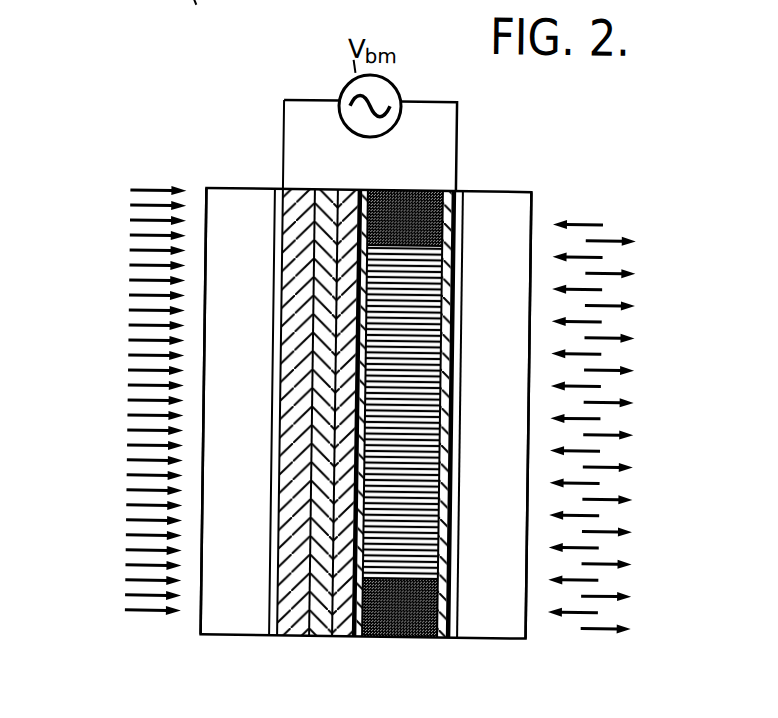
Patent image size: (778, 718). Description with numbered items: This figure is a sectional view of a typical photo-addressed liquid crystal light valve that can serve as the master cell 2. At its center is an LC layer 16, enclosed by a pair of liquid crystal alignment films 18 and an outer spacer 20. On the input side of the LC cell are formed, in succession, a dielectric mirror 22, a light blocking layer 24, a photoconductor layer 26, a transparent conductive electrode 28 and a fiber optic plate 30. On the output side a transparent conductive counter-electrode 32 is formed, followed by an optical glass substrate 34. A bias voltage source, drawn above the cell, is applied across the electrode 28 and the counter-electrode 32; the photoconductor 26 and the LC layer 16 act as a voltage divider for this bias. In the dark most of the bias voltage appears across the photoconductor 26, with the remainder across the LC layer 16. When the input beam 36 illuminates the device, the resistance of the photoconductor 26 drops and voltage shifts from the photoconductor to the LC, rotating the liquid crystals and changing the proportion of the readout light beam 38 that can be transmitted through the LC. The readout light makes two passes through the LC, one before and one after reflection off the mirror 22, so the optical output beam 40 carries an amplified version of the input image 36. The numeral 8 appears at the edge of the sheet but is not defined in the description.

The master cell 2 is at (104, 184).
The light source 8 is at (196, 18).
The LC layer 16 is at (384, 580).
The liquid crystal alignment films 18 is at (364, 190).
The outer spacer 20 is at (425, 640).
The dielectric mirror 22 is at (340, 192).
The light blocking layer 24 is at (322, 637).
The photoconductor layer 26 is at (290, 637).
The transparent conductive electrode 28 is at (268, 213).
The fiber optic plate 30 is at (203, 210).
The transparent conductive counter-electrode 32 is at (460, 580).
The optical glass substrate 34 is at (529, 190).
The input beam 36 is at (134, 630).
The readout light beam 38 is at (577, 218).
The optical output beam 40 is at (610, 234).